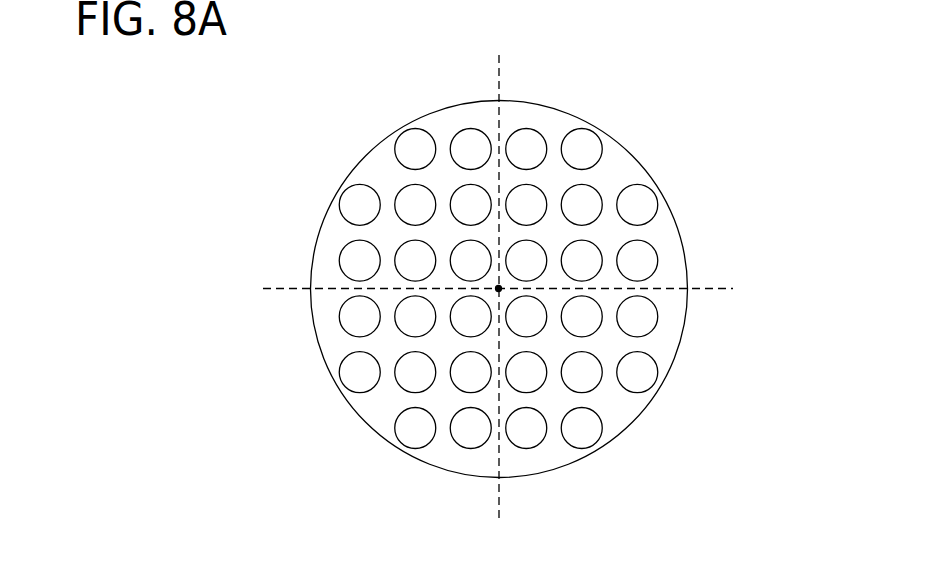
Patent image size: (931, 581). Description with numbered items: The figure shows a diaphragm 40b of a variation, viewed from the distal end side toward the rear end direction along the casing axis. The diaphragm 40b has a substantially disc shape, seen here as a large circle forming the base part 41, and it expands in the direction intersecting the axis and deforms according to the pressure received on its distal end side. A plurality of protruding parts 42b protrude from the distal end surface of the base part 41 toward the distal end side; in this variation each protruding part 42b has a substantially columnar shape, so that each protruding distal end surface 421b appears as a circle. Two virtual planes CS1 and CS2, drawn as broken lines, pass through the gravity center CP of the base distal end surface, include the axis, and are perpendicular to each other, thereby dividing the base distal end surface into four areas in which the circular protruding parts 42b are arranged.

The diaphragm 40b is at (547, 270).
The base part 41 is at (552, 117).
The protruding parts 42b is at (593, 150).
The protruding distal end surface 421b is at (644, 203).
The virtual plane CS1 is at (717, 288).
The virtual plane CS2 is at (497, 82).
The gravity center CP is at (498, 288).